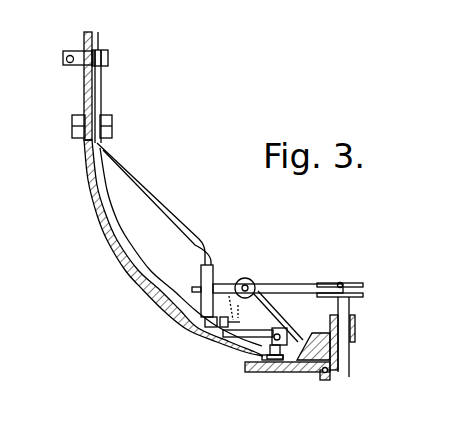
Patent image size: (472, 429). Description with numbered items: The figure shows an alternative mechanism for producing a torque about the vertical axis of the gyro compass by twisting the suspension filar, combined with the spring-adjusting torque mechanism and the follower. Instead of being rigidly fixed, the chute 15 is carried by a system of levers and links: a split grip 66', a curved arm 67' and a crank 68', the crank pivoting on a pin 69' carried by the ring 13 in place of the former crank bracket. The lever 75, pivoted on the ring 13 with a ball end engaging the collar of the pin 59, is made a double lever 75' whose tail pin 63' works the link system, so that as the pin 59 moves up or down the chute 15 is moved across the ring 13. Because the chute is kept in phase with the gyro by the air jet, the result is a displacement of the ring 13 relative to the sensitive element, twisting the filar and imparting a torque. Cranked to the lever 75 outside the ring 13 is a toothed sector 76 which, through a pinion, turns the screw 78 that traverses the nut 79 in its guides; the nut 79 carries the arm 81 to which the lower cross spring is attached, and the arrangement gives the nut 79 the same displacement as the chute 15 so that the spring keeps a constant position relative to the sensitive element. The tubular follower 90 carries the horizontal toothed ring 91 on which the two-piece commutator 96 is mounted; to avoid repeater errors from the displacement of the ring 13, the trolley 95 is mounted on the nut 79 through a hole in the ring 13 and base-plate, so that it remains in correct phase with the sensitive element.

The ring 13 is at (103, 230).
The chute 15 is at (73, 65).
The pin 59 is at (343, 283).
The pin 63' is at (185, 285).
The split grip 66' is at (205, 293).
The curved arm 67' is at (154, 204).
The crank 68' is at (116, 87).
The pin 69' is at (82, 138).
The lever 75 is at (278, 279).
The double lever 75' is at (245, 278).
The toothed sector 76 is at (278, 316).
The screw 78 is at (297, 330).
The nut 79 is at (286, 330).
The arm 81 is at (181, 252).
The tubular follower 90 is at (320, 374).
The toothed ring 91 is at (252, 372).
The trolley 95 is at (278, 372).
The commutator 96 is at (262, 358).